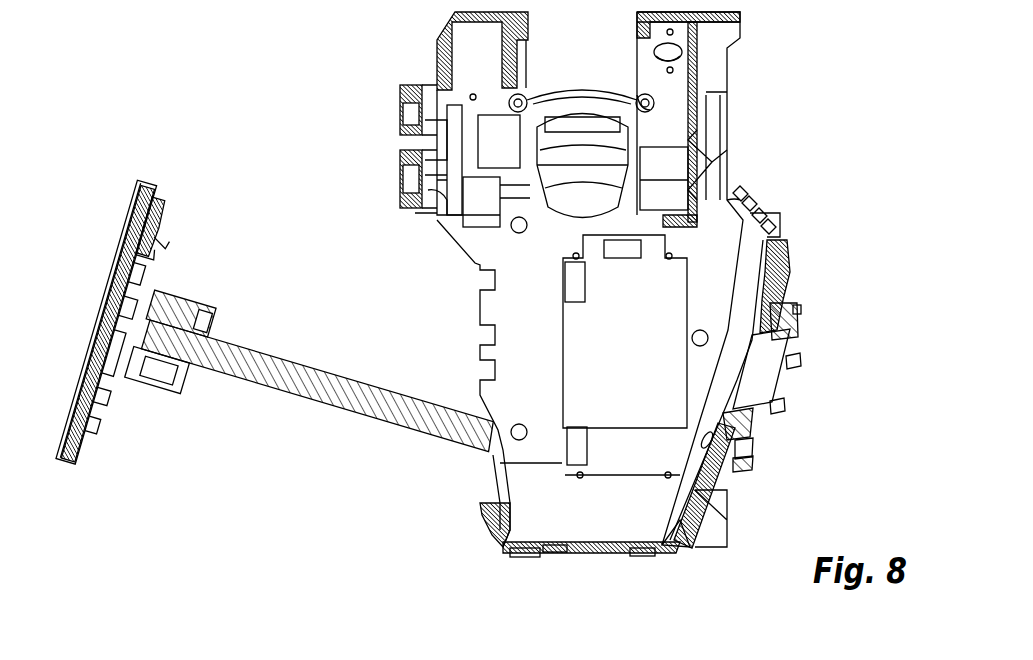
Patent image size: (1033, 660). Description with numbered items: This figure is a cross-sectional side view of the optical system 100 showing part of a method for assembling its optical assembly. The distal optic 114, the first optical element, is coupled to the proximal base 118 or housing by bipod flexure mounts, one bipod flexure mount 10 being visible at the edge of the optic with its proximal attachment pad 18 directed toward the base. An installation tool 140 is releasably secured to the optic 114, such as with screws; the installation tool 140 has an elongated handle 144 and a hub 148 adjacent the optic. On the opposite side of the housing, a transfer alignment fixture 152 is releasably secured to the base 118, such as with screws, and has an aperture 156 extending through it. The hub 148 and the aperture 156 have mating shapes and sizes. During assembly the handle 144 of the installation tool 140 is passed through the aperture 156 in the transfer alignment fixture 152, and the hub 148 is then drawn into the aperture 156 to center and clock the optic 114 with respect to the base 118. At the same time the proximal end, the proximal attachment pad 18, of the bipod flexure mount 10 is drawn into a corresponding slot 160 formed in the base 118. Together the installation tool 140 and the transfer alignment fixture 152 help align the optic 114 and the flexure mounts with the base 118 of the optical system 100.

The optical system 100 is at (722, 137).
The proximal base 118 is at (673, 553).
The slot 160 is at (790, 282).
The transfer alignment fixture 152 is at (795, 328).
The aperture 156 is at (768, 370).
The distal optic 114 is at (130, 243).
The bipod flexure mount 10 is at (165, 238).
The proximal attachment pad 18 is at (182, 248).
The handle 144 is at (305, 350).
The installation tool 140 is at (258, 392).
The hub 148 is at (196, 300).